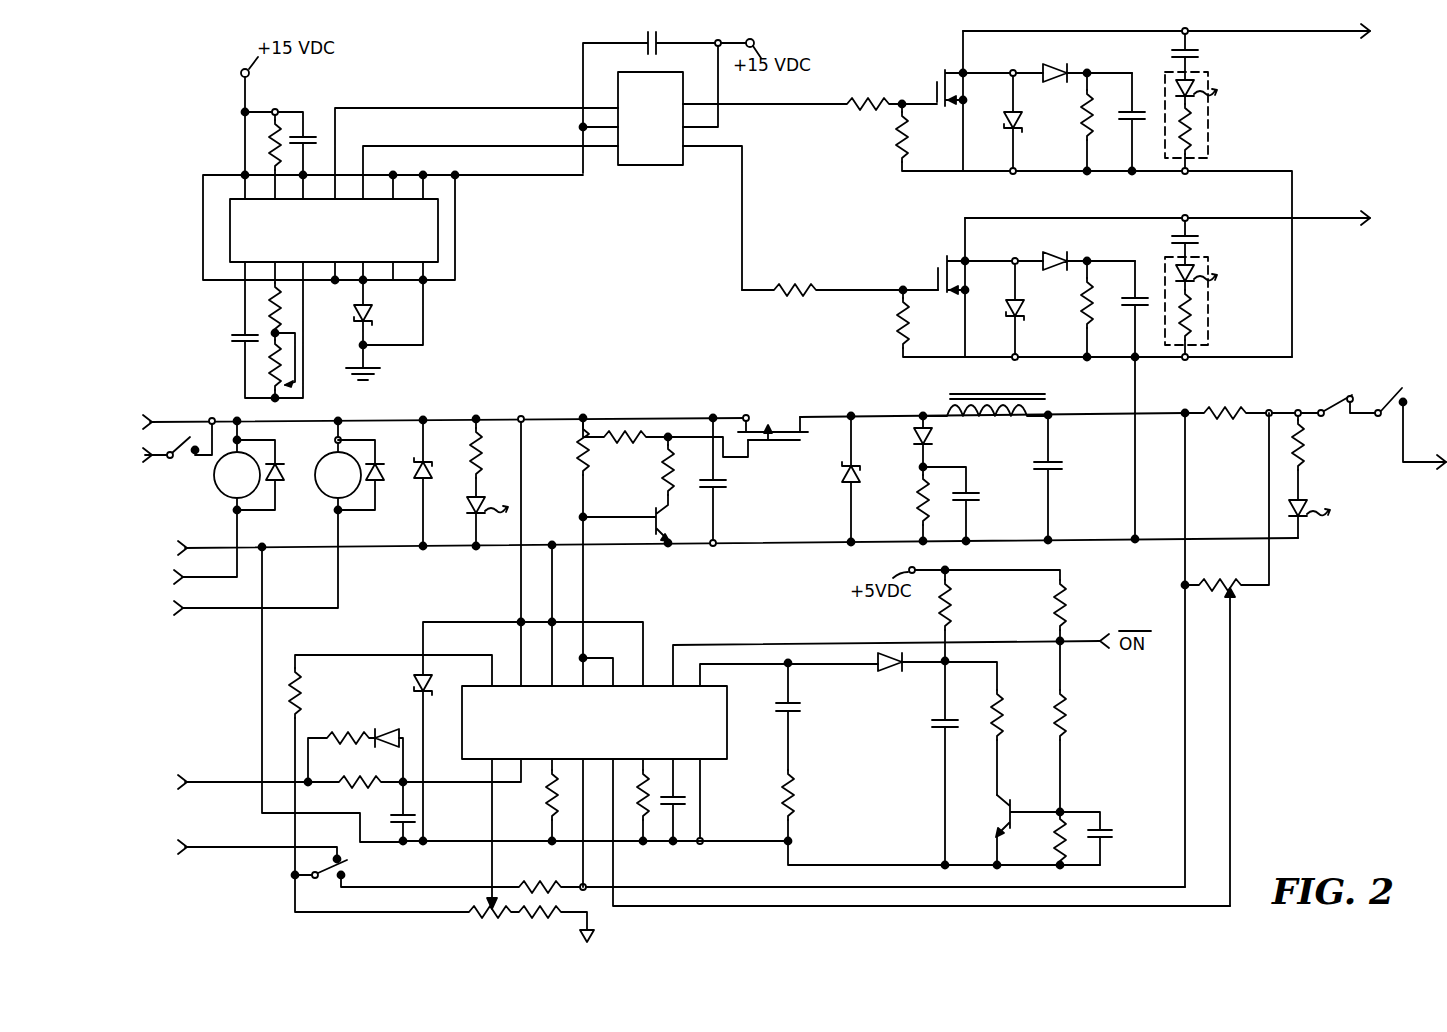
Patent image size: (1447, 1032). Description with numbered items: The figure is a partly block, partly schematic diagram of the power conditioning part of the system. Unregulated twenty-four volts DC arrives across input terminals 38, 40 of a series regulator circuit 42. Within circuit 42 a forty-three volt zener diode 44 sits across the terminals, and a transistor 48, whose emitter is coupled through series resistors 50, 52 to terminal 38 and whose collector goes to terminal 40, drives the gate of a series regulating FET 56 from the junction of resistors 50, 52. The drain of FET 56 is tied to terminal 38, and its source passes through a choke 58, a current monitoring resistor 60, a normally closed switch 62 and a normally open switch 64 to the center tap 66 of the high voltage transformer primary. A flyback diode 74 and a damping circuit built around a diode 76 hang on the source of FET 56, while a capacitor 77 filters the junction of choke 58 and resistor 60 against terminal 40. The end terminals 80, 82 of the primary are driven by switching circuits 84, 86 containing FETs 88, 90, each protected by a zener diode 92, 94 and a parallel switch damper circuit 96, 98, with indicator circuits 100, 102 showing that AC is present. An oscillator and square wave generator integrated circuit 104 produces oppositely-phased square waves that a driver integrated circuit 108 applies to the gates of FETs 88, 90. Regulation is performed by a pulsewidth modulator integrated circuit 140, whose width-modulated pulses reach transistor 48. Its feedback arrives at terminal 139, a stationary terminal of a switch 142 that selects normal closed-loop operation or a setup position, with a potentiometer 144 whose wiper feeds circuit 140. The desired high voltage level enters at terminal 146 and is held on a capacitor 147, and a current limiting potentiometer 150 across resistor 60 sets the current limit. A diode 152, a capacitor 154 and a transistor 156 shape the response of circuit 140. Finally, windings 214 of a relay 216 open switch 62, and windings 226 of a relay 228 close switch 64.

The input terminal 38 is at (428, 416).
The input terminal 40 is at (711, 547).
The series regulator circuit 42 is at (604, 463).
The zener diode 44 is at (418, 488).
The transistor 48 is at (601, 468).
The resistor 50 is at (628, 490).
The resistor 52 is at (630, 443).
The FET 56 is at (780, 410).
The choke 58 is at (937, 402).
The current monitoring resistor 60 is at (1234, 405).
The normally closed switch 62 is at (1333, 389).
The normally open switch 64 is at (1380, 379).
The center tap 66 is at (1440, 457).
The flyback diode 74 is at (840, 478).
The diode 76 is at (912, 441).
The capacitor 77 is at (1056, 469).
The end terminal 80 is at (1182, 31).
The end terminal 82 is at (1183, 218).
The switching circuit 84 is at (897, 67).
The switching circuit 86 is at (912, 243).
The FET 88 is at (967, 95).
The FET 90 is at (968, 283).
The zener diode 92 is at (1018, 130).
The zener diode 94 is at (1022, 316).
The switch damper circuit 96 is at (1077, 67).
The switch damper circuit 98 is at (1075, 255).
The indicator circuit 100 is at (1233, 125).
The indicator circuit 102 is at (1220, 316).
The oscillator and square wave generator integrated circuit 104 is at (440, 207).
The driver integrated circuit 108 is at (612, 165).
The terminal 139 is at (231, 850).
The pulsewidth modulator integrated circuit 140 is at (670, 620).
The switch 142 is at (366, 868).
The potentiometer 144 is at (495, 918).
The terminal 146 is at (321, 776).
The capacitor 147 is at (396, 814).
The current limiting potentiometer 150 is at (1243, 566).
The diode 152 is at (893, 672).
The capacitor 154 is at (940, 732).
The transistor 156 is at (1028, 804).
The windings 214 is at (217, 492).
The relay 216 is at (193, 483).
The windings 226 is at (326, 497).
The relay 228 is at (308, 470).